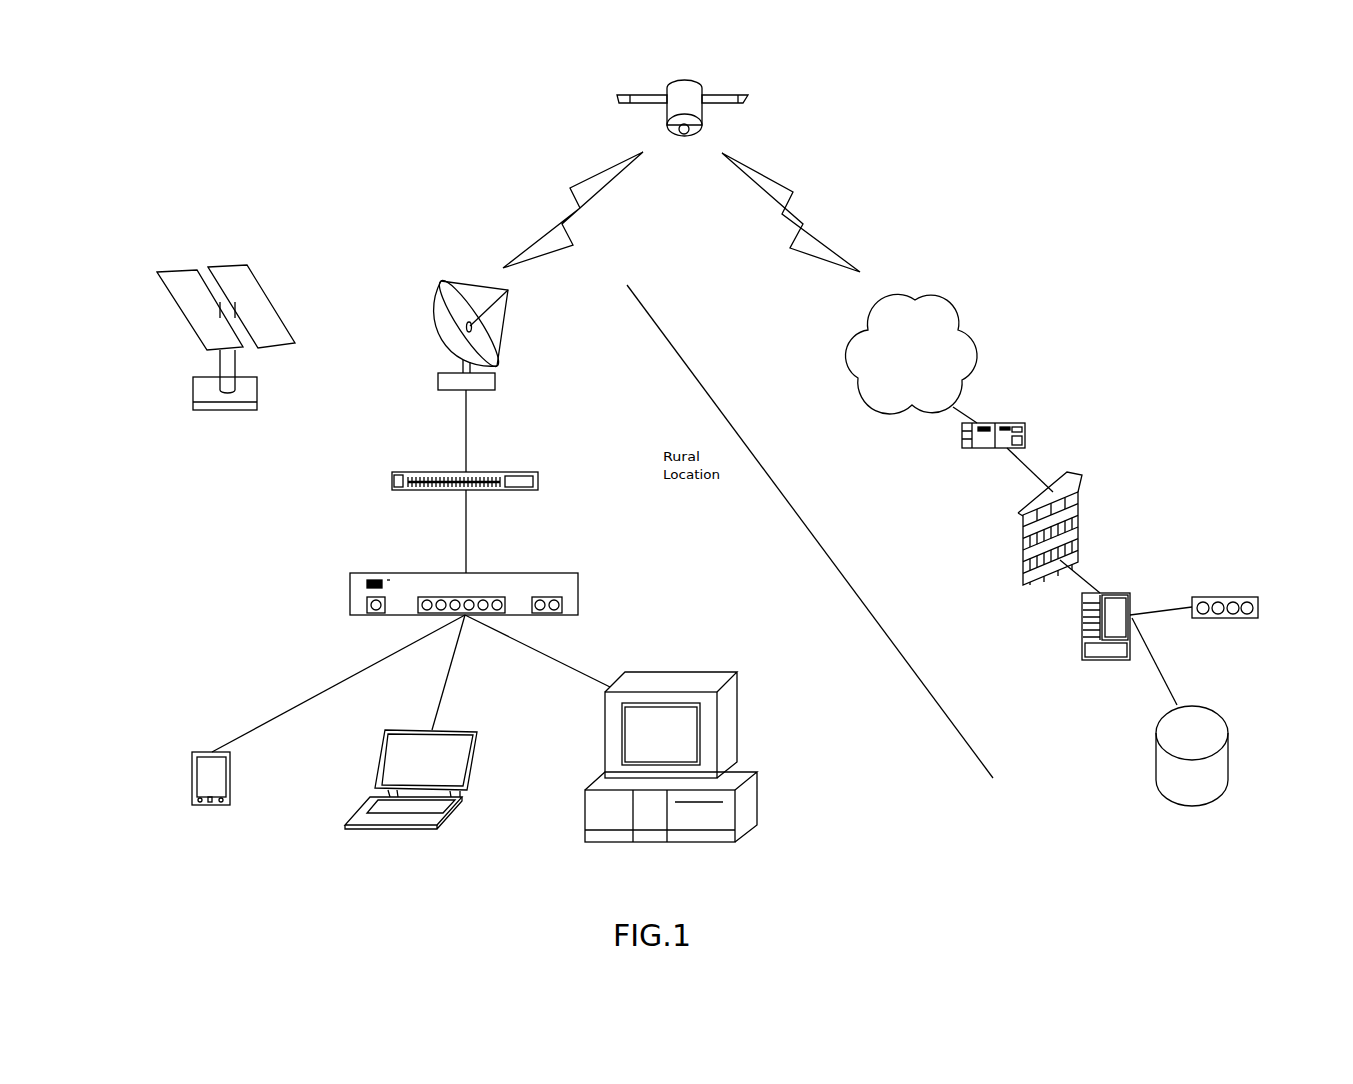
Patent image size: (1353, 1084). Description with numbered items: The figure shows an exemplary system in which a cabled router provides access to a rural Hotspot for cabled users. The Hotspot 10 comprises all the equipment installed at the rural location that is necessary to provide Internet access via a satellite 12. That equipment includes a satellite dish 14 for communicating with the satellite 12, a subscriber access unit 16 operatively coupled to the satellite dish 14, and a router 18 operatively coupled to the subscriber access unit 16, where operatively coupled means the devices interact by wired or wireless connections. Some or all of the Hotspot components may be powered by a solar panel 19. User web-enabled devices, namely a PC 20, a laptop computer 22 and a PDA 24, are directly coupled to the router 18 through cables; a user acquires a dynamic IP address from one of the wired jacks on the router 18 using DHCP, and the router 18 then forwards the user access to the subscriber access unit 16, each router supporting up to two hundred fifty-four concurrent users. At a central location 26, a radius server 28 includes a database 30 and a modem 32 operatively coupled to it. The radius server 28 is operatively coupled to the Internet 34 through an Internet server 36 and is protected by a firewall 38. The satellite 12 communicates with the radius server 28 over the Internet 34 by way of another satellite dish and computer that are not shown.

The Hotspot 10 is at (412, 253).
The satellite 12 is at (703, 112).
The satellite dish 14 is at (437, 374).
The subscriber access unit 16 is at (392, 473).
The router 18 is at (350, 575).
The solar panel 19 is at (225, 410).
The PC 20 is at (737, 722).
The laptop computer 22 is at (470, 785).
The PDA 24 is at (202, 752).
The central location 26 is at (1077, 333).
The radius server 28 is at (1122, 593).
The database 30 is at (1228, 755).
The modem 32 is at (1227, 597).
The Internet 34 is at (963, 312).
The Internet server 36 is at (1025, 427).
The firewall 38 is at (1078, 487).